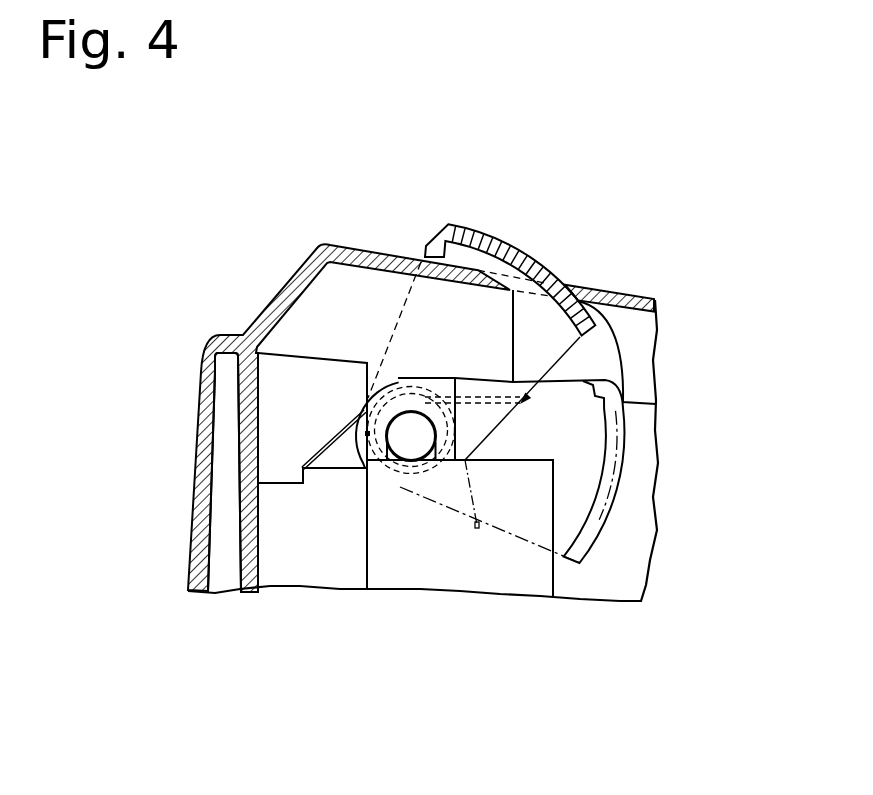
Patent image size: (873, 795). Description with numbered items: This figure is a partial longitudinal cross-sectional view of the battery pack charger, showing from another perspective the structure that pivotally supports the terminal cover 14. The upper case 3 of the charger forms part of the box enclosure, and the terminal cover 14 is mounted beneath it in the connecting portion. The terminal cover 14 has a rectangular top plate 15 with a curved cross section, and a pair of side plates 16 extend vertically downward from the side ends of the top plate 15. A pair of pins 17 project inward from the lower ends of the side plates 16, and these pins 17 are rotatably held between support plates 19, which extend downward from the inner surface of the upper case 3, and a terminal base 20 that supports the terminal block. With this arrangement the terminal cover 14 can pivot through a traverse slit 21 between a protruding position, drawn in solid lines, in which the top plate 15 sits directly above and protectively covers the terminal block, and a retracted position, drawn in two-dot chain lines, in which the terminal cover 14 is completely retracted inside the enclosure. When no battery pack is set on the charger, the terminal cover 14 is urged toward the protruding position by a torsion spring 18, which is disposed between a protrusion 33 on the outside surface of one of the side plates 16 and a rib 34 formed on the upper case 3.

The upper case 3 is at (332, 248).
The terminal cover 14 is at (491, 231).
The top plate 15 is at (512, 258).
The side plates 16 is at (592, 283).
The pins 17 is at (409, 437).
The torsion spring 18 is at (428, 478).
The support plates 19 is at (330, 298).
The terminal base 20 is at (468, 577).
The traverse slit 21 is at (548, 343).
The protrusion 33 is at (372, 402).
The rib 34 is at (277, 395).